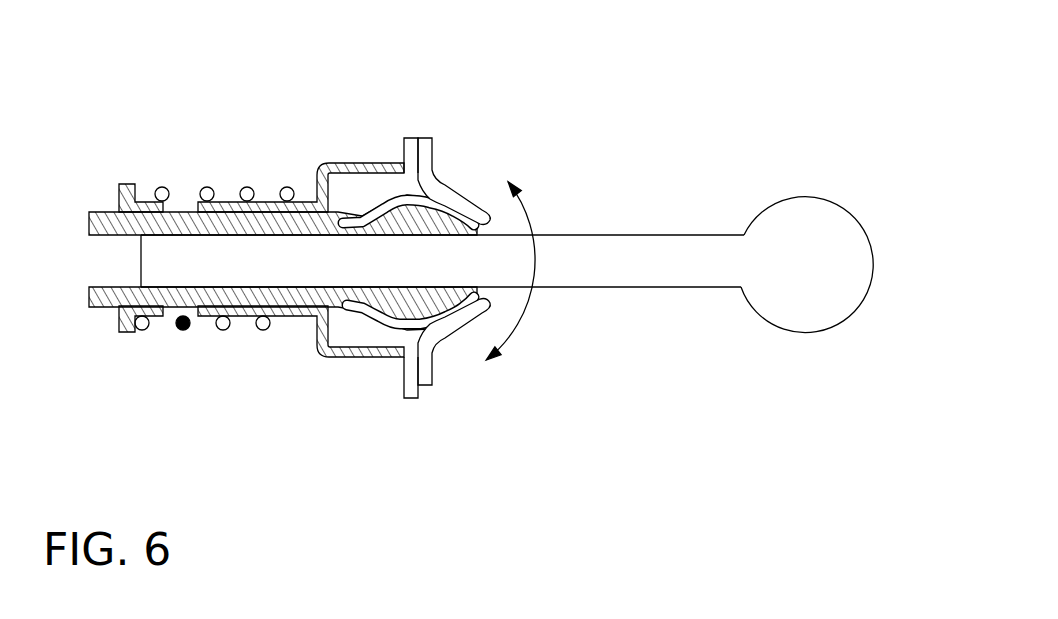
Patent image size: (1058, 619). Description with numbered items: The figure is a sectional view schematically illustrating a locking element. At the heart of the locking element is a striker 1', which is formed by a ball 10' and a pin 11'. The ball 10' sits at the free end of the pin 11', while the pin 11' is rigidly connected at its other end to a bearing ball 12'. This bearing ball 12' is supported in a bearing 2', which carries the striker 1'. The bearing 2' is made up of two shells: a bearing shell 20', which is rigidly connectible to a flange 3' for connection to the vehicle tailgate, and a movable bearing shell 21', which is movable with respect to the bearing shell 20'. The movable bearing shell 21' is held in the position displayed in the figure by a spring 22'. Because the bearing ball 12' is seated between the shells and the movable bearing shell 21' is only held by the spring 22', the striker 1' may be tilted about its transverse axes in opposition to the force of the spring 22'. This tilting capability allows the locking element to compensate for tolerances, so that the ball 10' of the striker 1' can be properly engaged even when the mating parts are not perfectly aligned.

The striker 1' is at (536, 262).
The bearing 2' is at (283, 199).
The flange 3' is at (392, 310).
The ball 10' is at (836, 295).
The pin 11' is at (442, 337).
The bearing ball 12' is at (398, 195).
The bearing shell 20' is at (491, 244).
The movable bearing shell 21' is at (301, 299).
The spring 22' is at (212, 311).